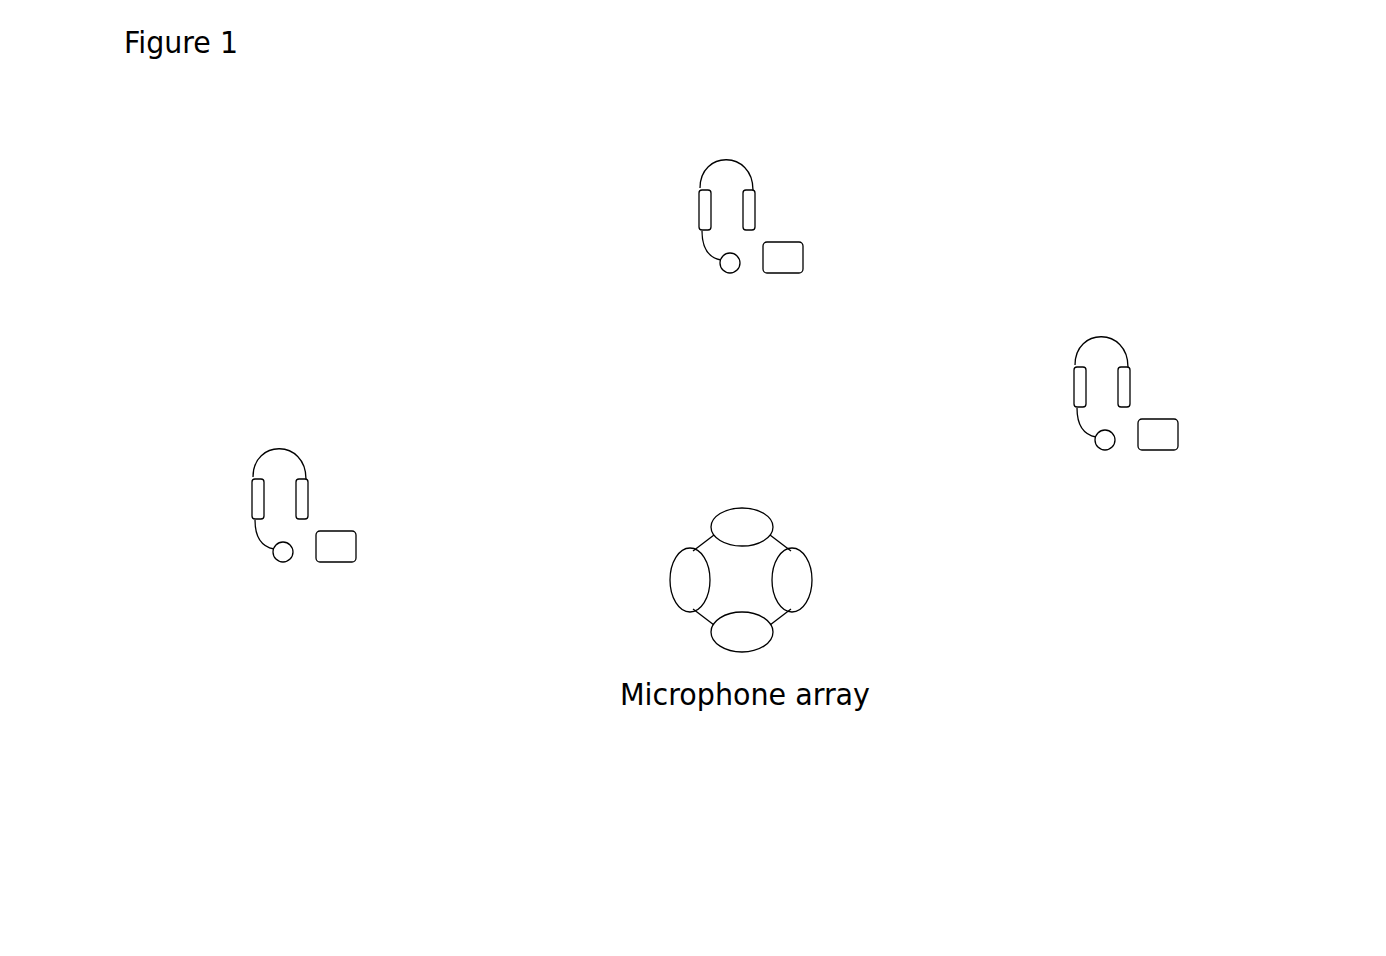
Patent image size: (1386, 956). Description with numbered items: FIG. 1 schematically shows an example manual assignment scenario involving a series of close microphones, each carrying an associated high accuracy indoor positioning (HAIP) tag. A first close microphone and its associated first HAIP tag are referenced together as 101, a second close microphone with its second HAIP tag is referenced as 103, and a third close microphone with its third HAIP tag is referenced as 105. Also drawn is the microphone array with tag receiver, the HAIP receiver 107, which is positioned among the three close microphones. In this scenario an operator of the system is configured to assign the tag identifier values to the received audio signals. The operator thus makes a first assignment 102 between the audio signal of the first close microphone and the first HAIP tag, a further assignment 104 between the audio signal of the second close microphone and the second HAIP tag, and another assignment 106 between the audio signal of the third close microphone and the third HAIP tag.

The first close microphone and associated HAIP tag 101 is at (795, 212).
The first assignment 102 is at (882, 101).
The second close microphone and associated HAIP tag 103 is at (1180, 408).
The second assignment 104 is at (1247, 316).
The third close microphone and associated HAIP tag 105 is at (347, 516).
The third assignment 106 is at (418, 424).
The microphone array with tag receiver 107 is at (812, 558).